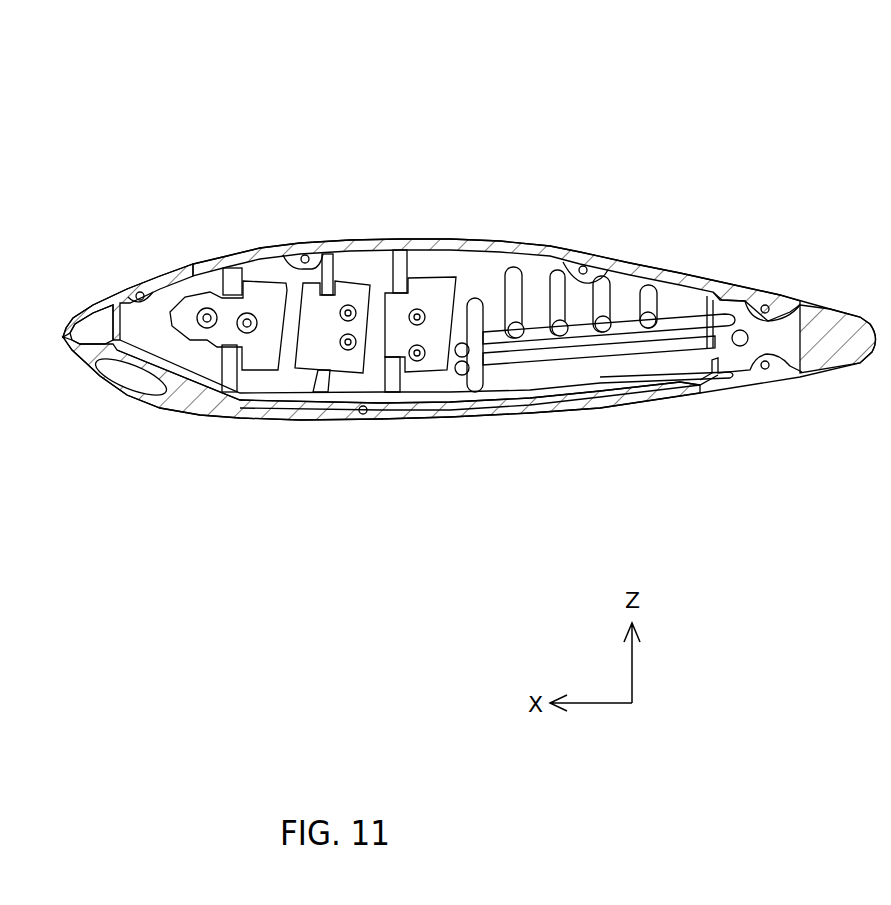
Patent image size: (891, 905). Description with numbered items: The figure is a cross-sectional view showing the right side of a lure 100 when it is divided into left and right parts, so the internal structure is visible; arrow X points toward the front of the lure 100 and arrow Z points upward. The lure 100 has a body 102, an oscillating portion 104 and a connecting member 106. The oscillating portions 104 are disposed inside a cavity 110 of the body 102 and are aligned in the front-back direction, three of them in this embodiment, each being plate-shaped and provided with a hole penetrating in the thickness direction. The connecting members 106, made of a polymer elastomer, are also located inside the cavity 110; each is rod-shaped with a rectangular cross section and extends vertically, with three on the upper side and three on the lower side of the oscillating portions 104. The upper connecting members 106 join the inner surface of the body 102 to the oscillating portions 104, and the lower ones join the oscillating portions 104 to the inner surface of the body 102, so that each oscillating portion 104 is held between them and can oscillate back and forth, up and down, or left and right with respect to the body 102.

The lure 100 is at (423, 48).
The body 102 is at (95, 300).
The oscillating portion 104 is at (262, 268).
The connecting member 106 is at (225, 283).
The cavity 110 is at (258, 397).